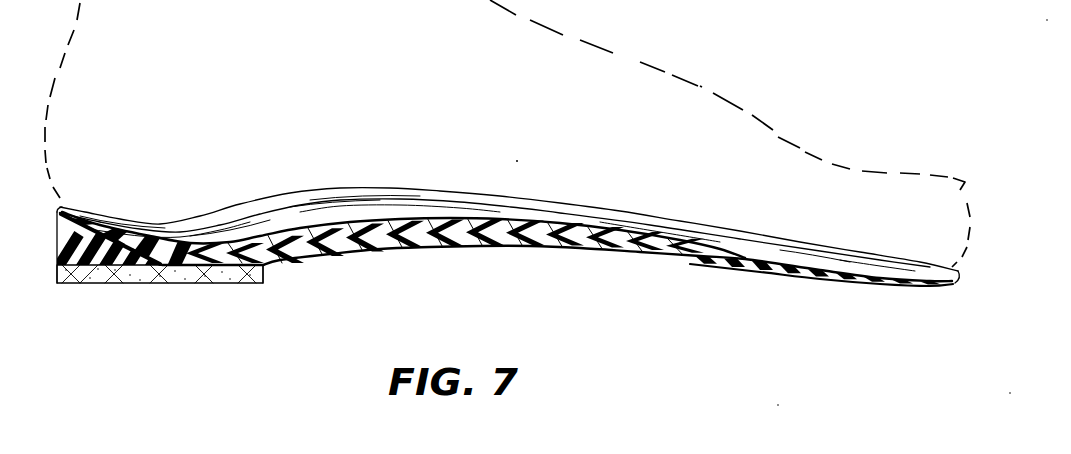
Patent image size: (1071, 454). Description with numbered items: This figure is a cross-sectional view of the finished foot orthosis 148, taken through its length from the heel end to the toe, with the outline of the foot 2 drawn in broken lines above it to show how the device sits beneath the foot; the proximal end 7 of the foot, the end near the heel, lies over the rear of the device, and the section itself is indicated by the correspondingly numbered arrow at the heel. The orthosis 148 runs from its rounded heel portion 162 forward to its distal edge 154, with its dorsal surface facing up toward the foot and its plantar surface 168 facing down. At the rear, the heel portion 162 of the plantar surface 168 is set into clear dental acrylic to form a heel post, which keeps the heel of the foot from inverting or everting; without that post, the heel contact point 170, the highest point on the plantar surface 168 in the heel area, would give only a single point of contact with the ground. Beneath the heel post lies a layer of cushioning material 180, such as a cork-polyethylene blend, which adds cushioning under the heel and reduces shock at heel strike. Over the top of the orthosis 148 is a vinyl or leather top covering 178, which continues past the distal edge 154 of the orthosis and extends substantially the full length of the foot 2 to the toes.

The foot 2 is at (777, 110).
The proximal end of the foot 7 is at (48, 194).
The orthosis 148 is at (456, 236).
The distal edge of the orthosis 154 is at (797, 272).
The heel portion of the orthosis 162 is at (48, 256).
The plantar surface of the orthosis 168 is at (722, 264).
The heel contact point 170 is at (214, 266).
The top covering 178 is at (612, 230).
The layer of cushioning material 180 is at (163, 282).